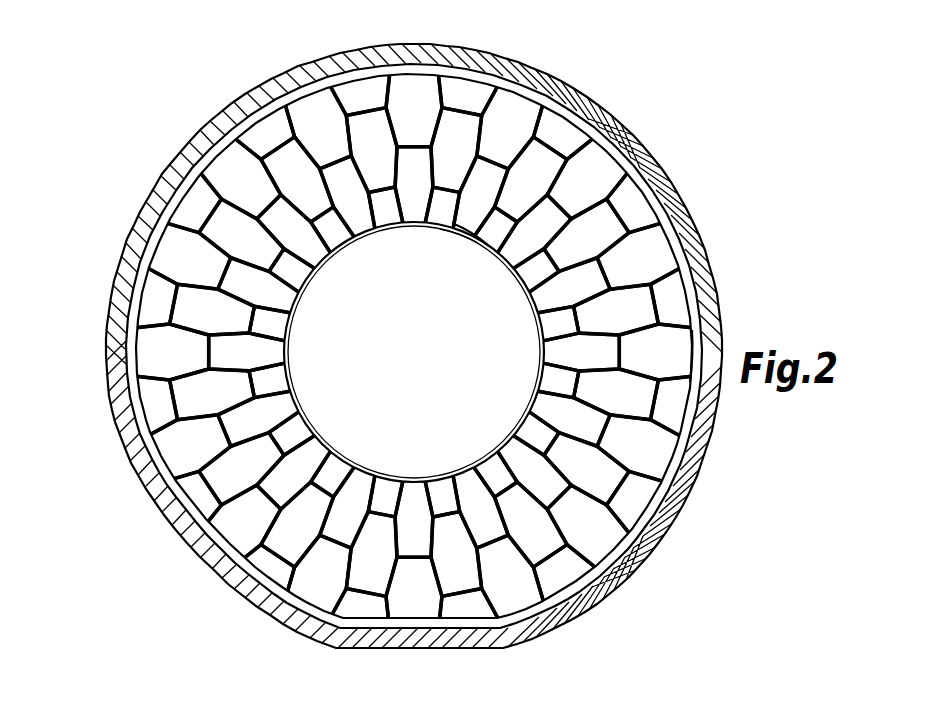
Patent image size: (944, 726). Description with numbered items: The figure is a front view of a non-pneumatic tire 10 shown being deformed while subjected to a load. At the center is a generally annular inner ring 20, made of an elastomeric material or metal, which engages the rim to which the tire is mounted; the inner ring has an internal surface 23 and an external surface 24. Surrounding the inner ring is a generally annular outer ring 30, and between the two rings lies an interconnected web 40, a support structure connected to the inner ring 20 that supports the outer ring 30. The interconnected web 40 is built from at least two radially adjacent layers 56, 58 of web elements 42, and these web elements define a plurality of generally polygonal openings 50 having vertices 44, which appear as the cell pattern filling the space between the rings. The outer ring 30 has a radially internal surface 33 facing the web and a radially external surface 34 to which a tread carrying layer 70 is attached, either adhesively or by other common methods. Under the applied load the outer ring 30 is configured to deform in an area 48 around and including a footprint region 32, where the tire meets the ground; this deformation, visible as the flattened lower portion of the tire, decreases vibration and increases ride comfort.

The non-pneumatic tire 10 is at (714, 163).
The generally annular inner ring 20 is at (500, 257).
The internal surface 23 is at (468, 228).
The external surface 24 is at (462, 232).
The generally annular outer ring 30 is at (675, 247).
The footprint region 32 is at (432, 650).
The radially internal surface 33 is at (690, 362).
The radially external surface 34 is at (702, 329).
The interconnected web 40 is at (637, 222).
The web elements 42 is at (246, 478).
The vertices 44 is at (250, 300).
The area 48 is at (392, 610).
The generally polygonal openings 50 is at (334, 587).
The radially adjacent layer of web elements 56 is at (568, 542).
The radially adjacent layer of web elements 58 is at (465, 482).
The tread carrying layer 70 is at (175, 168).